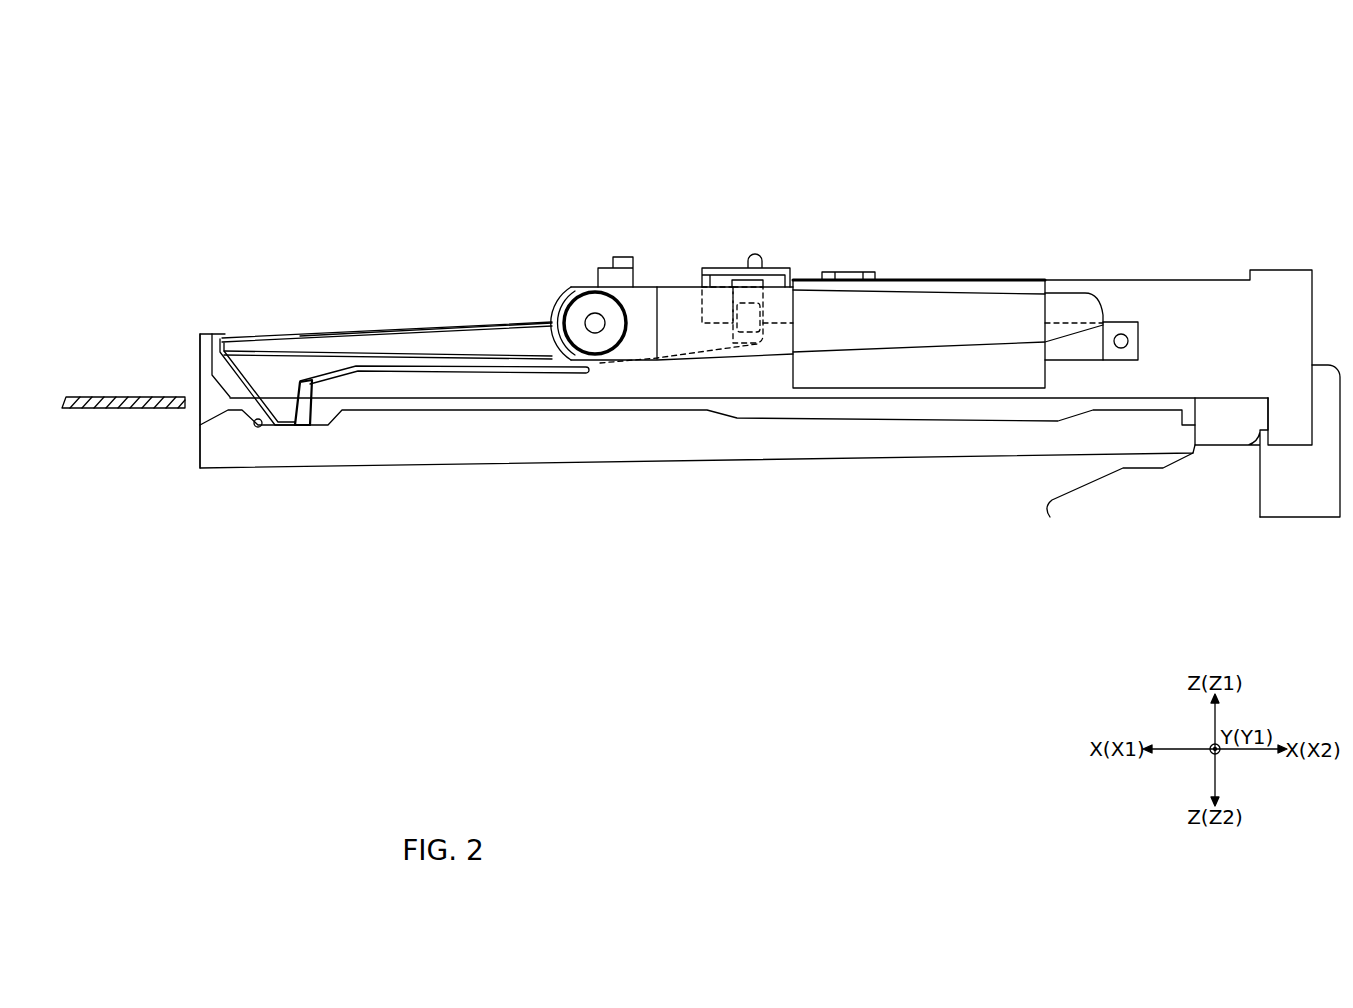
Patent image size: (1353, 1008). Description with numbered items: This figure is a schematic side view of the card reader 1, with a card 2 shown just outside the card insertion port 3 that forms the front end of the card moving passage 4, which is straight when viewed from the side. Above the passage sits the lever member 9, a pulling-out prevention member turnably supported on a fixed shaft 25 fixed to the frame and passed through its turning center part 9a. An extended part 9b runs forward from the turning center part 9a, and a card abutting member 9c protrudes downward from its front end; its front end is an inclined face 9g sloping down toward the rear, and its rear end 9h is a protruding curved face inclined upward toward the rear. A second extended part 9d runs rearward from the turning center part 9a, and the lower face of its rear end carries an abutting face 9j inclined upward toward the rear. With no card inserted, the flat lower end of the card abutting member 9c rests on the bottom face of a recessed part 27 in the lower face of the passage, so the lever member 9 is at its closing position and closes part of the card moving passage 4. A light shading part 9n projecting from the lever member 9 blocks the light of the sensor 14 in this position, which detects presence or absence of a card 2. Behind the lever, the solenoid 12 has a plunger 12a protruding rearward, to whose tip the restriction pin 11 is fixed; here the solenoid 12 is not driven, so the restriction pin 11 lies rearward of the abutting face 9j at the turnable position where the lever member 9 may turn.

The card reader 1 is at (1041, 106).
The card 2 is at (122, 396).
The card insertion port 3 is at (176, 419).
The card moving passage 4 is at (900, 412).
The lever member 9 is at (456, 327).
The turning center part 9a is at (658, 287).
The extended part 9b is at (366, 331).
The card abutting member 9c is at (289, 427).
The extended part 9d is at (968, 292).
The inclined face 9g is at (232, 380).
The rear end 9h is at (330, 425).
The abutting face 9j is at (1080, 339).
The light shading part 9n is at (733, 331).
The restriction pin 11 is at (1140, 341).
The solenoid 12 is at (897, 279).
The plunger 12a is at (1122, 322).
The sensor 14 is at (725, 268).
The fixed shaft 25 is at (590, 315).
The recessed part 27 is at (254, 427).